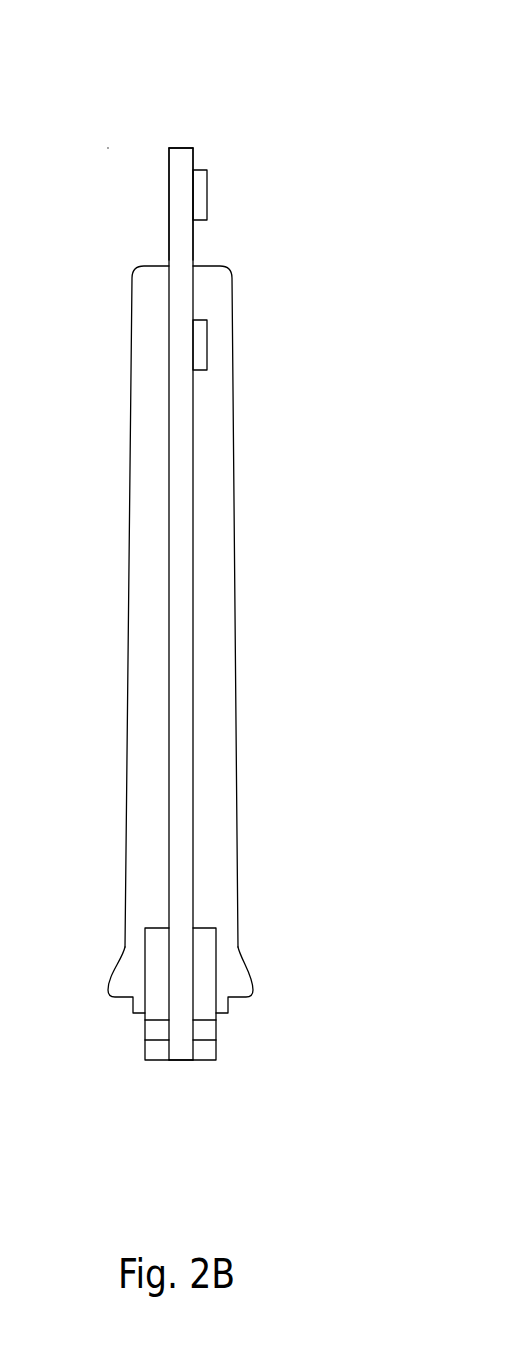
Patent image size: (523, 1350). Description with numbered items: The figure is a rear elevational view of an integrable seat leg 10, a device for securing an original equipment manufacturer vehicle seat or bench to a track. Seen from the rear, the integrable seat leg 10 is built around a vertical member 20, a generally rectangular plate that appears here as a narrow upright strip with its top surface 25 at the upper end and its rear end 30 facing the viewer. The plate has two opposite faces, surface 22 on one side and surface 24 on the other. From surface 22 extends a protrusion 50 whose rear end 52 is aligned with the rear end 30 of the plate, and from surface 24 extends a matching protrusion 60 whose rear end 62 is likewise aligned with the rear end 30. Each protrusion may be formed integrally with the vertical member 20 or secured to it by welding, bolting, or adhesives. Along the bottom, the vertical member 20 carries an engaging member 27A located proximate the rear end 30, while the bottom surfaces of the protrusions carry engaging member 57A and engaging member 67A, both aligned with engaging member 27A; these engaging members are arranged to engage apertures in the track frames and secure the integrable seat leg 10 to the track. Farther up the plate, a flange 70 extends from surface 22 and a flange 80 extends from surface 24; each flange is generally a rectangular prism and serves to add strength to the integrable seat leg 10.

The integrable seat leg 10 is at (295, 66).
The vertical member 20 is at (188, 138).
The surface 22 is at (168, 187).
The surface 24 is at (193, 155).
The top surface 25 is at (178, 147).
The engaging member 27A is at (182, 1042).
The rear end 30 is at (183, 239).
The protrusion 50 is at (141, 943).
The rear end 52 is at (158, 1005).
The engaging member 57A is at (158, 1050).
The protrusion 60 is at (222, 943).
The rear end 62 is at (208, 1003).
The engaging member 67A is at (208, 1050).
The flange 70 is at (144, 412).
The flange 80 is at (217, 431).